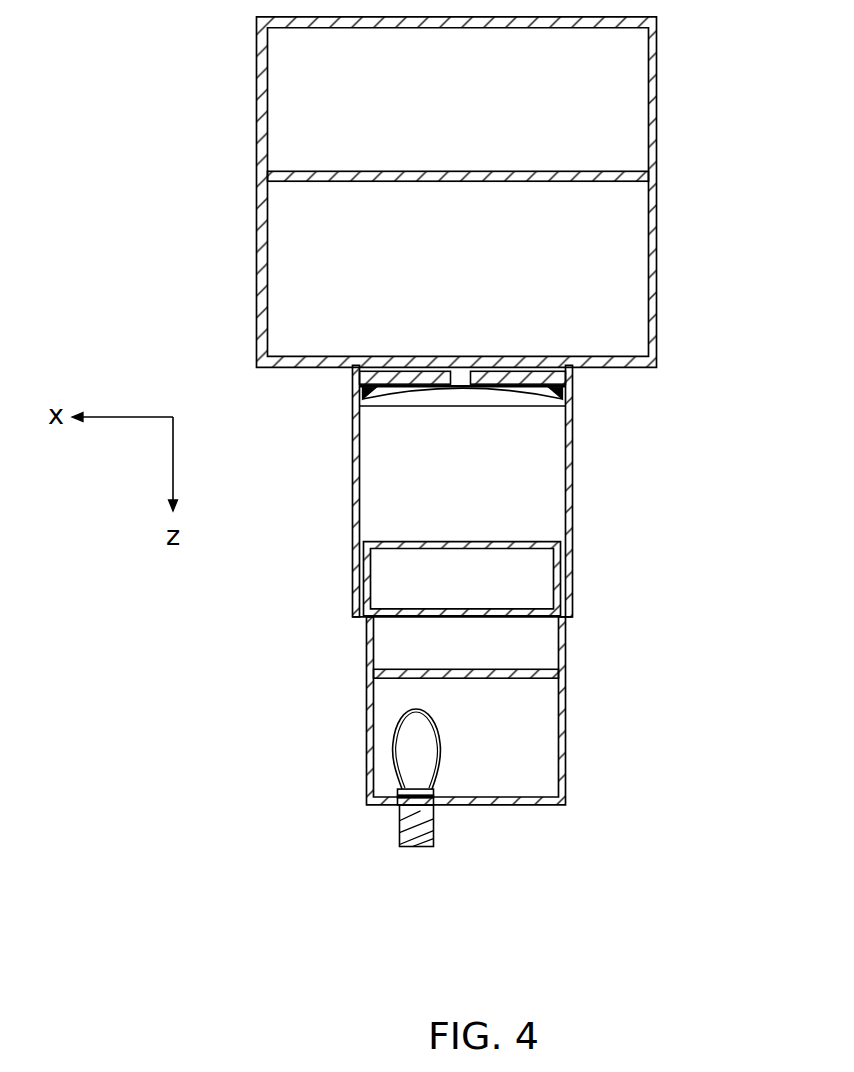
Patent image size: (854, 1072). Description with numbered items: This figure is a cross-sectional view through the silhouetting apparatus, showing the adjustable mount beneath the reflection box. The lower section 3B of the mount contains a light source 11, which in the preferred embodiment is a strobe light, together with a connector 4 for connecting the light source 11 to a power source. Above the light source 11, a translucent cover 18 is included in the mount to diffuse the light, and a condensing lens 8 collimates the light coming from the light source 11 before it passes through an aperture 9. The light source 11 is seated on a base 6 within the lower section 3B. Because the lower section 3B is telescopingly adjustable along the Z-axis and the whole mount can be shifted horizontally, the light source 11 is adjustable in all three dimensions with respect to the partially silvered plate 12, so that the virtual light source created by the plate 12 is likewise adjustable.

The partially silvered plate 12 is at (596, 300).
The aperture 9 is at (567, 389).
The condensing lens 8 is at (483, 392).
The lower section 3B is at (563, 700).
The translucent cover 18 is at (490, 671).
The light source 11 is at (392, 712).
The bulb base 6 is at (397, 790).
The connector 4 is at (399, 832).